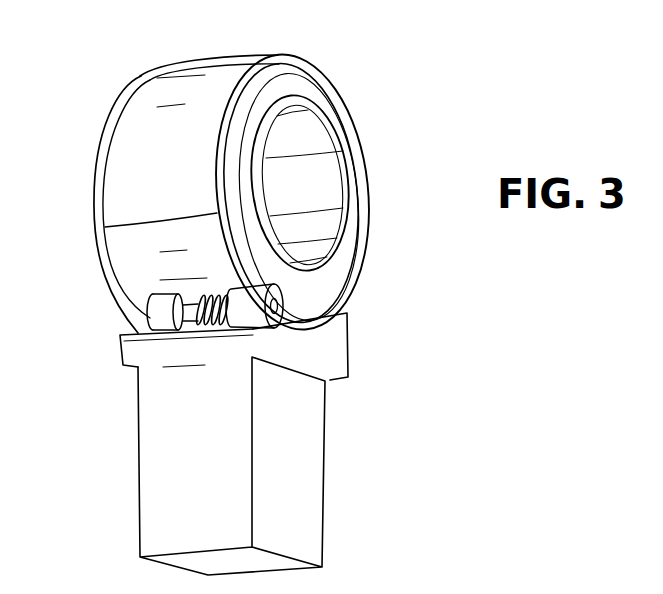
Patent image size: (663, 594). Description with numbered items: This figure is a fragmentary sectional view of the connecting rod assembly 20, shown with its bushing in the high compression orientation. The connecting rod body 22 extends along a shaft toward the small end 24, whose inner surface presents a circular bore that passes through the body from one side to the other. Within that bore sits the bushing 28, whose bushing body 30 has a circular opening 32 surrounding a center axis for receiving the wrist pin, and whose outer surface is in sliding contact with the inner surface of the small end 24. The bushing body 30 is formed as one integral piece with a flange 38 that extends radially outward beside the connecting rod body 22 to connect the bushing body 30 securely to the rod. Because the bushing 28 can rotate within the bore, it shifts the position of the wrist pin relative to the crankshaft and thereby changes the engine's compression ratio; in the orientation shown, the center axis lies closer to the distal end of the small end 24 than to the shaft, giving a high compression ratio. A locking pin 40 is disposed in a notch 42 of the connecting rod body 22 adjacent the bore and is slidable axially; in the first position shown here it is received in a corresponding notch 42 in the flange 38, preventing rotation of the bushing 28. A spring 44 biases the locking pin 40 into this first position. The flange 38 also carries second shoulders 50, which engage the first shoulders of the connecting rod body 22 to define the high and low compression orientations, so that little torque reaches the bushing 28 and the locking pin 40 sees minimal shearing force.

The connecting rod assembly 20 is at (384, 140).
The connecting rod body 22 is at (331, 453).
The small end 24 is at (150, 89).
The bushing 28 is at (374, 193).
The bushing body 30 is at (318, 86).
The circular opening 32 is at (315, 147).
The flange 38 is at (367, 262).
The locking pin 40 is at (253, 329).
The notch 42 is at (227, 296).
The spring 44 is at (232, 331).
The second shoulders 50 is at (118, 338).